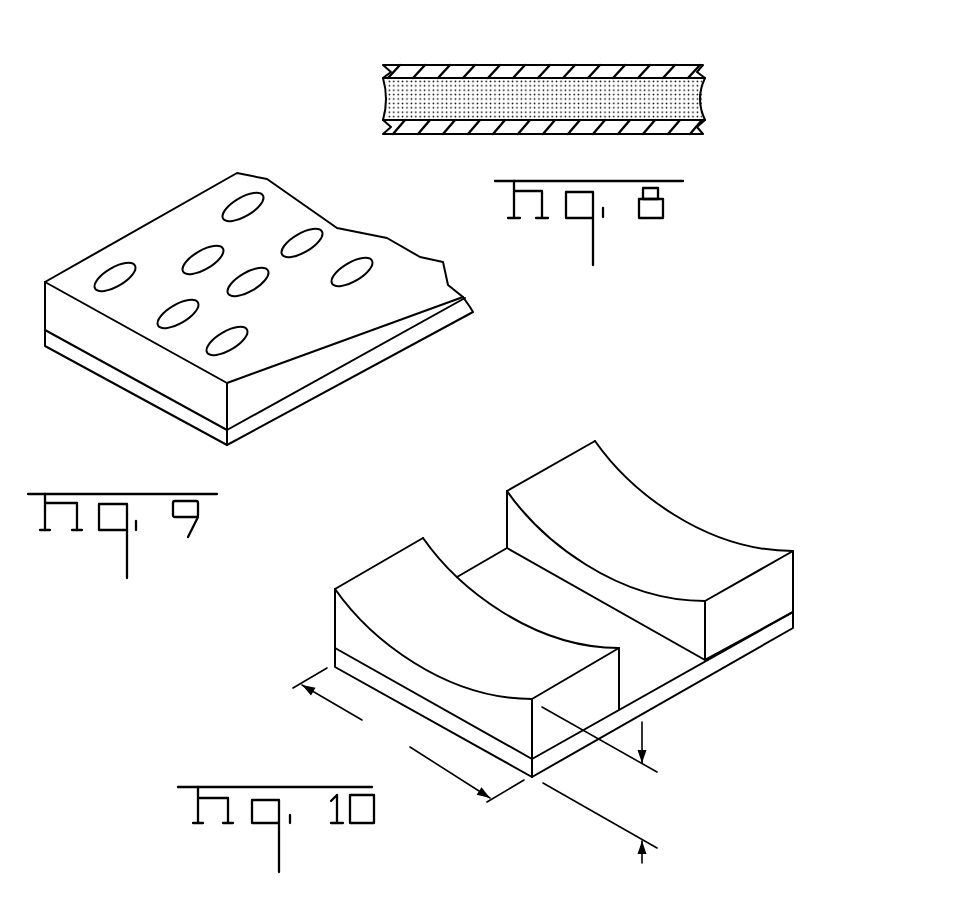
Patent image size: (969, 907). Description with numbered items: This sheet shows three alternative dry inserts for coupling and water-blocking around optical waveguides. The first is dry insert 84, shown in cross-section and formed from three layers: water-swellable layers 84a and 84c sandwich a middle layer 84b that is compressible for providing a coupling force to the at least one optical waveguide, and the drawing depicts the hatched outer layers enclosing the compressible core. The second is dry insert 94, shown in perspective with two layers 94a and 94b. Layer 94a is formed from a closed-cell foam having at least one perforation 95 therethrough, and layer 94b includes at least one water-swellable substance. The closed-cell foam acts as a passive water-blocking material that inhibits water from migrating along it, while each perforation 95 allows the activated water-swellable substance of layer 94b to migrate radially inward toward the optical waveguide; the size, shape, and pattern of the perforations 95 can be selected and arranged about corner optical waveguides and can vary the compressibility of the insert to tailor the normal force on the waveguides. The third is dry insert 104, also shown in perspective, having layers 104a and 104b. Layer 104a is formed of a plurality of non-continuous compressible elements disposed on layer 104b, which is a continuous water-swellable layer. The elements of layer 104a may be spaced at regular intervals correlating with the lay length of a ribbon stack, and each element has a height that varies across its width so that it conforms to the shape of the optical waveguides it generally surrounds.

In FIG. 8, the dry insert 84 is at (526, 81).
In FIG. 8, the water-swellable layer 84a is at (637, 133).
In FIG. 8, the compressible layer 84b is at (677, 100).
In FIG. 8, the water-swellable layer 84c is at (657, 66).
In FIG. 9, the dry insert 94 is at (259, 291).
In FIG. 9, the closed-cell foam layer 94a is at (255, 276).
In FIG. 9, the water-swellable layer 94b is at (248, 430).
In FIG. 9, the perforation 95 is at (252, 275).
In FIG. 10, the dry insert 104 is at (508, 624).
In FIG. 10, the compressible elements layer 104a is at (635, 507).
In FIG. 10, the water-swellable layer 104b is at (650, 663).